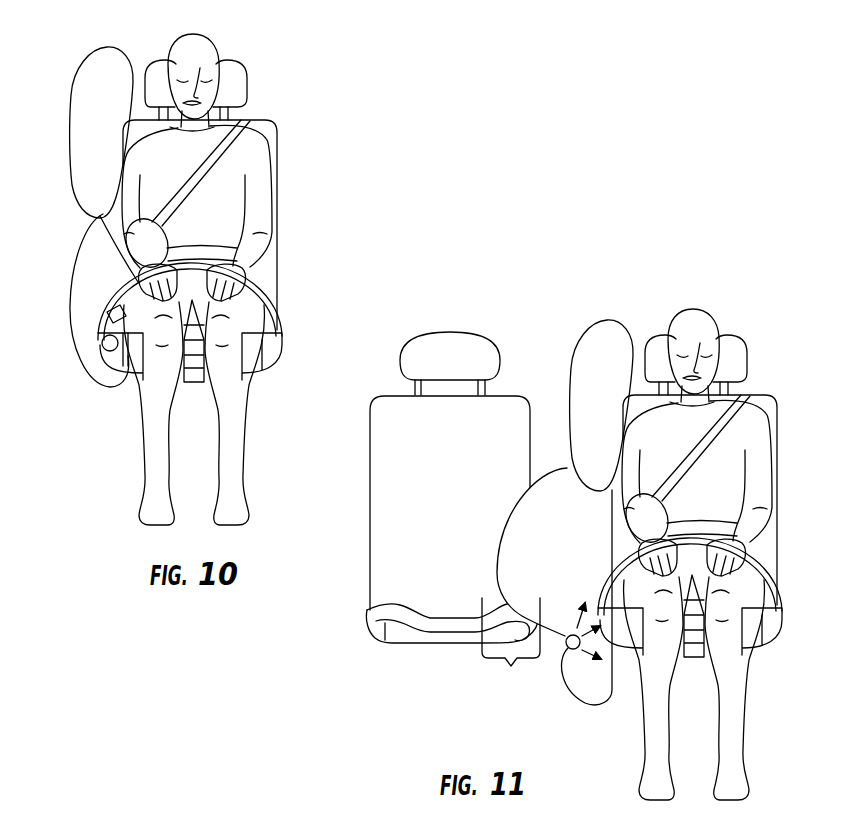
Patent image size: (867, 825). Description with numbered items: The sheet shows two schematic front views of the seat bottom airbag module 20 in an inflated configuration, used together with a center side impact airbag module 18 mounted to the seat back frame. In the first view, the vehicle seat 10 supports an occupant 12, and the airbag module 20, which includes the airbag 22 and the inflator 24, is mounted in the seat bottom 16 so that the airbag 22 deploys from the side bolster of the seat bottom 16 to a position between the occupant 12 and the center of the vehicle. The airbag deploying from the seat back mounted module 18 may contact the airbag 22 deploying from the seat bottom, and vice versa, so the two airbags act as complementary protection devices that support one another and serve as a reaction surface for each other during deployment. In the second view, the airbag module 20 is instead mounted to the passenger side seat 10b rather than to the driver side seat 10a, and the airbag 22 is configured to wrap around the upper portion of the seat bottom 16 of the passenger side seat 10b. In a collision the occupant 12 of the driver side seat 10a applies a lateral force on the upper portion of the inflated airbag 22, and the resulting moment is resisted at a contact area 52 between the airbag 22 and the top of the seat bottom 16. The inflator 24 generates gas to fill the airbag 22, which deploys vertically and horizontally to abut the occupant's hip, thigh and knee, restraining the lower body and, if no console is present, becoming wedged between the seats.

In FIG. 10, the vehicle seat 10 is at (297, 73).
In FIG. 11, the driver side seat 10a is at (783, 384).
In FIG. 11, the passenger side seat 10b is at (453, 326).
In FIG. 10, the occupant 12 is at (270, 212).
In FIG. 11, the occupant 12 is at (770, 488).
In FIG. 11, the seat bottom 16 is at (438, 641).
In FIG. 10, the center side impact airbag module 18 is at (80, 103).
In FIG. 11, the center side impact airbag module 18 is at (574, 378).
In FIG. 10, the airbag module 20 is at (48, 234).
In FIG. 11, the airbag module 20 is at (552, 452).
In FIG. 10, the airbag 22 is at (73, 283).
In FIG. 11, the airbag 22 is at (593, 698).
In FIG. 10, the inflator 24 is at (112, 349).
In FIG. 11, the inflator 24 is at (571, 651).
In FIG. 11, the contact area 52 is at (511, 649).